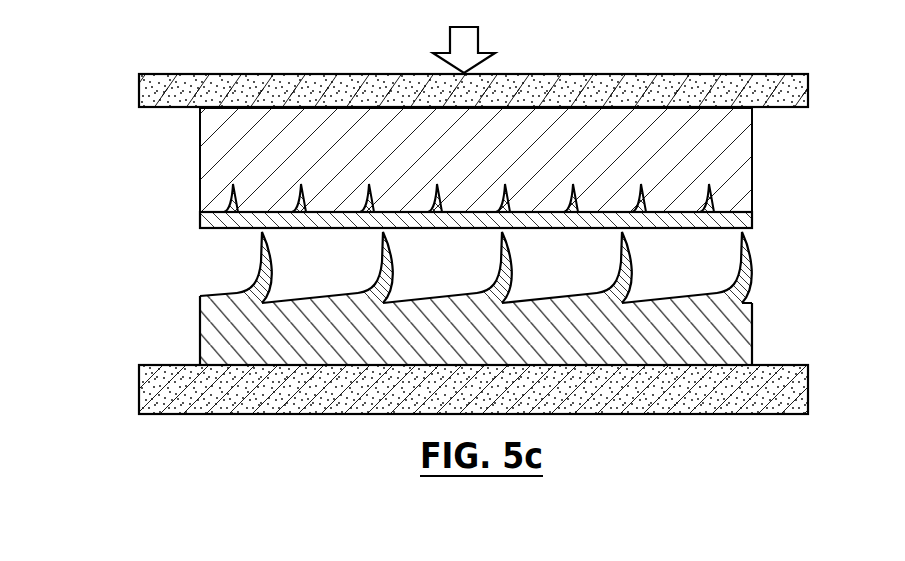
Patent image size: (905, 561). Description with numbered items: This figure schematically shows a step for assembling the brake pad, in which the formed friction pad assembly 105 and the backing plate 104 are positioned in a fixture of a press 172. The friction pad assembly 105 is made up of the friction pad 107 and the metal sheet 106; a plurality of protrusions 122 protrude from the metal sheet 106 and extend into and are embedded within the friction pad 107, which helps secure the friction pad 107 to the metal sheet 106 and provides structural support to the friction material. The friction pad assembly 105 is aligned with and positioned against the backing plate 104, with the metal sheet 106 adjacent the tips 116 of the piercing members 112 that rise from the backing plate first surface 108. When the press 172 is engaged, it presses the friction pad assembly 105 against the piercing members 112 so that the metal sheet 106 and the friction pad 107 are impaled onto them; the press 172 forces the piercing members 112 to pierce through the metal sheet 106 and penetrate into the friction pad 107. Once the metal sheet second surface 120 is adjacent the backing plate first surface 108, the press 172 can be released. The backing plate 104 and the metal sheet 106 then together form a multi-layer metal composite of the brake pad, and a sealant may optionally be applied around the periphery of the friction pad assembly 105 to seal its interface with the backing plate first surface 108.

The press 172 is at (94, 65).
The friction pad assembly 105 is at (465, 177).
The friction pad 107 is at (742, 148).
The protrusions 122 is at (713, 193).
The metal sheet 106 is at (742, 222).
The metal sheet second surface 120 is at (203, 229).
The backing plate first surface 108 is at (213, 296).
The tips 116 is at (745, 233).
The piercing members 112 is at (743, 284).
The backing plate 104 is at (466, 299).